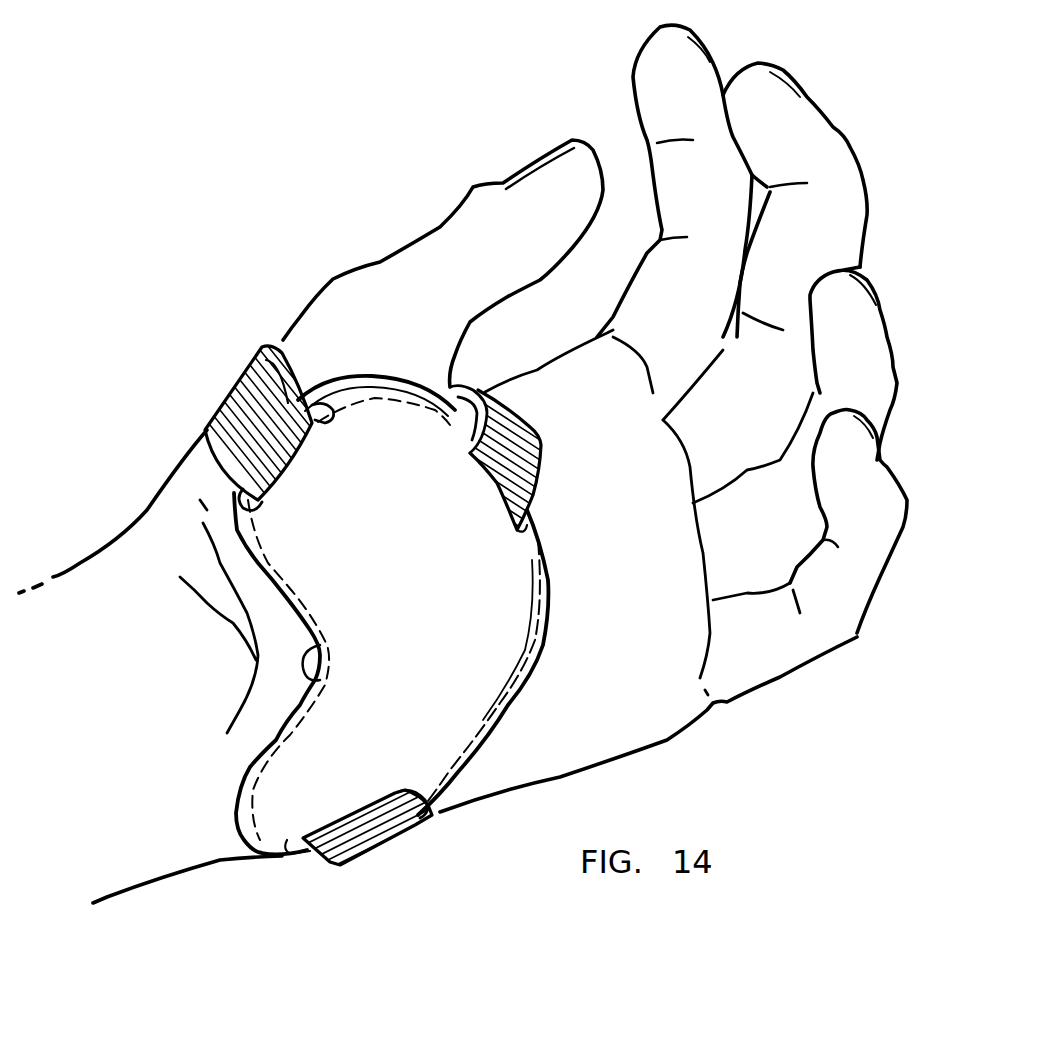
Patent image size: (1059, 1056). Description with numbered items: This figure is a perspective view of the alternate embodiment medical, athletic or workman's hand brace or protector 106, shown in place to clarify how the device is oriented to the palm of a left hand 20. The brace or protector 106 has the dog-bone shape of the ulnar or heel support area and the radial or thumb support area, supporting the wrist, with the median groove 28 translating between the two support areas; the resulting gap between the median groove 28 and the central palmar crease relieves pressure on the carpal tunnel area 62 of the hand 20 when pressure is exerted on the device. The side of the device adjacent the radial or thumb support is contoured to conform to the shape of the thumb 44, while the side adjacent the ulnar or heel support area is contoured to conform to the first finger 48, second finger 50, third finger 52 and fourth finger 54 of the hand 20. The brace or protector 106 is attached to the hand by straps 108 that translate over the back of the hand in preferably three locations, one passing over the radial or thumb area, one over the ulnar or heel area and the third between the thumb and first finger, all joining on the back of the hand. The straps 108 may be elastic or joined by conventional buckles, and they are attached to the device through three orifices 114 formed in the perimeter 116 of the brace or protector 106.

The hand 20 is at (337, 266).
The thumb 44 is at (537, 239).
The first finger 48 is at (687, 116).
The second finger 50 is at (804, 156).
The third finger 52 is at (867, 353).
The fourth finger 54 is at (877, 506).
The carpal tunnel area 62 is at (283, 643).
The medical, athletic or workman's hand brace or protector 106 is at (429, 566).
The straps 108 is at (225, 388).
The orifices 114 is at (333, 412).
The perimeter 116 is at (487, 743).
The median groove 28 is at (320, 676).